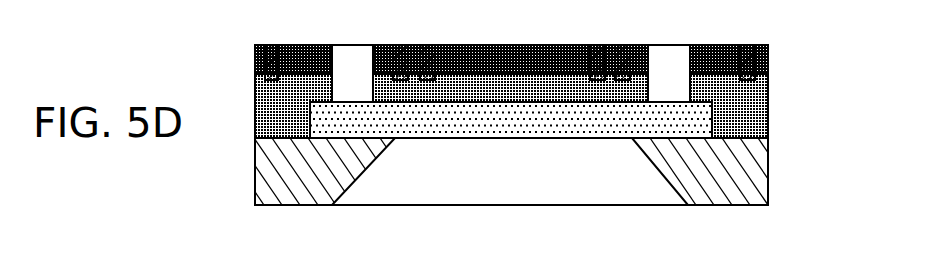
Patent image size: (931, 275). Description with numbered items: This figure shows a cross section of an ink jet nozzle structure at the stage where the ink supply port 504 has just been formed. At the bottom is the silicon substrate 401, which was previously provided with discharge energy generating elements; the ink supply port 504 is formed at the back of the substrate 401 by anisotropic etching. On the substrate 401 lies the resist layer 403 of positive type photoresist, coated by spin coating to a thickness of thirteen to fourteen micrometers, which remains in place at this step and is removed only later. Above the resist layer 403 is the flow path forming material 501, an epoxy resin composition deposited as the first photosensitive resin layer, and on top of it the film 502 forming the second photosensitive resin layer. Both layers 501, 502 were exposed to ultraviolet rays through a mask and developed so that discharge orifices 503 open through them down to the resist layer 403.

The substrate 401 is at (752, 181).
The resist layer 403 is at (673, 132).
The flow path forming material 501 is at (706, 87).
The film 502 is at (505, 48).
The discharge orifices 503 is at (352, 58).
The ink supply port 504 is at (577, 180).